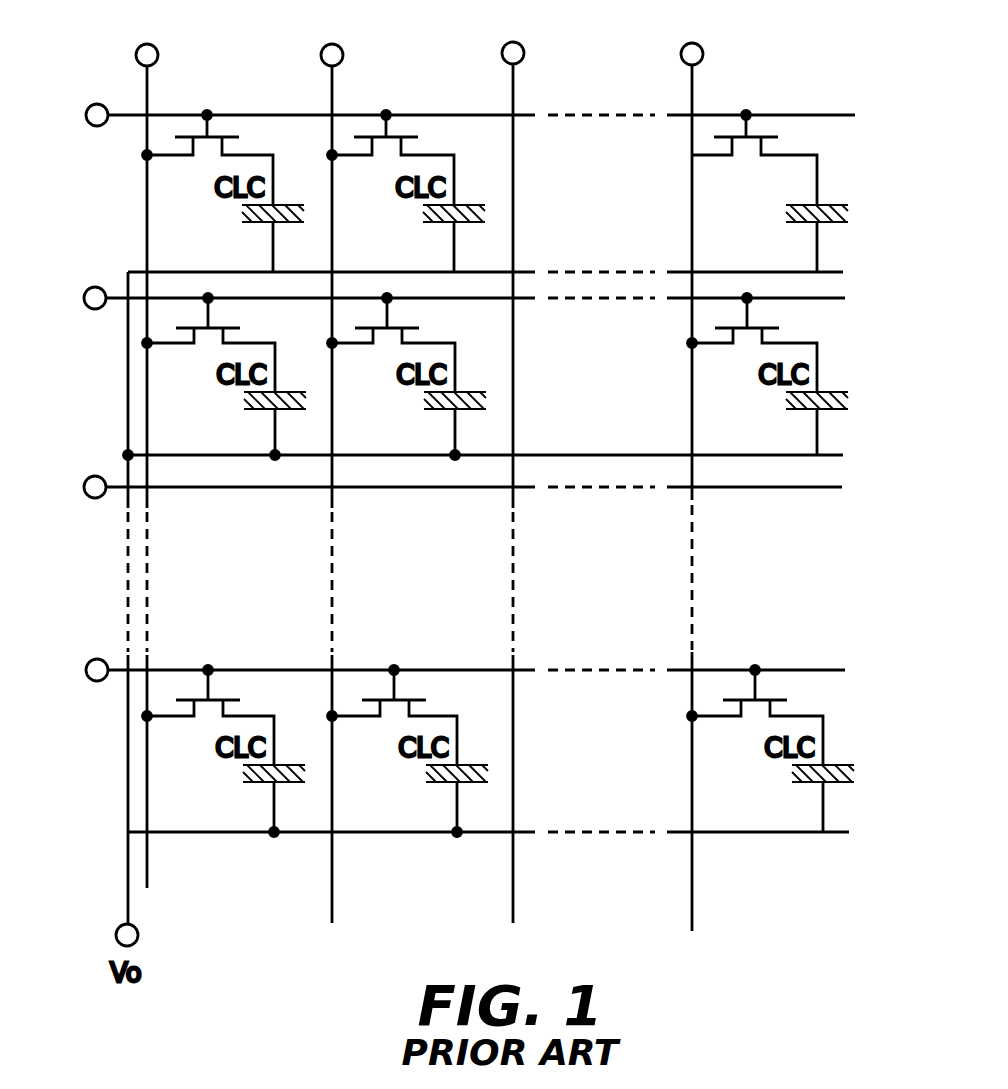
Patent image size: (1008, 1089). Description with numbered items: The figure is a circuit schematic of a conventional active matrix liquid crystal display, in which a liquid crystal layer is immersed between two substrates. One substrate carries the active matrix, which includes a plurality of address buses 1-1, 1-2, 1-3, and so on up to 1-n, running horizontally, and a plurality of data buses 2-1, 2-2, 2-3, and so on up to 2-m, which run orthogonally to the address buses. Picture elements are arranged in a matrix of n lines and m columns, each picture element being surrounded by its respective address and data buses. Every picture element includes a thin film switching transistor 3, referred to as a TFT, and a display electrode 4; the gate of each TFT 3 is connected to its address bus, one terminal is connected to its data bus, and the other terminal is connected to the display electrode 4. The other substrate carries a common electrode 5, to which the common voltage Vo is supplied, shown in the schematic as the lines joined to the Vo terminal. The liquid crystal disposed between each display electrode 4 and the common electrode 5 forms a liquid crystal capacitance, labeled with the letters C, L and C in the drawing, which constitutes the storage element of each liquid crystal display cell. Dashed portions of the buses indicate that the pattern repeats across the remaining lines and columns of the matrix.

The address bus 1-1 is at (448, 115).
The address bus 1-2 is at (441, 299).
The address bus 1-3 is at (439, 488).
The address bus 1-n is at (444, 671).
The data bus 2-1 is at (153, 448).
The data bus 2-2 is at (334, 467).
The data bus 2-3 is at (511, 465).
The data bus 2-m is at (697, 471).
The thin film switching transistor 3 is at (757, 137).
The display electrode 4 is at (835, 204).
The common electrode 5 is at (832, 274).